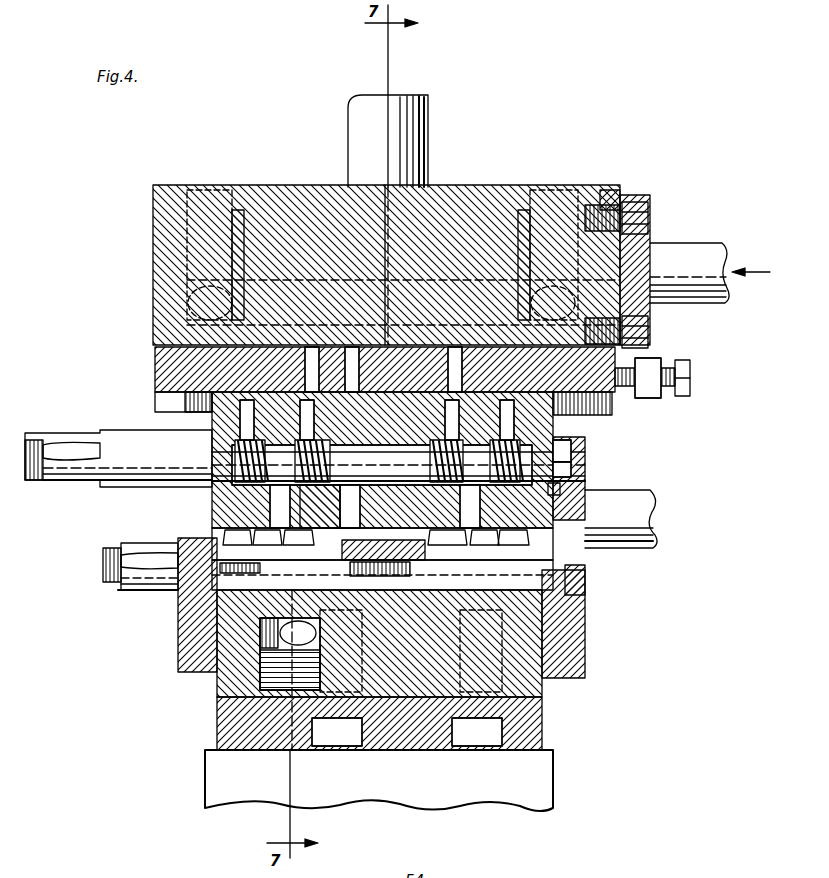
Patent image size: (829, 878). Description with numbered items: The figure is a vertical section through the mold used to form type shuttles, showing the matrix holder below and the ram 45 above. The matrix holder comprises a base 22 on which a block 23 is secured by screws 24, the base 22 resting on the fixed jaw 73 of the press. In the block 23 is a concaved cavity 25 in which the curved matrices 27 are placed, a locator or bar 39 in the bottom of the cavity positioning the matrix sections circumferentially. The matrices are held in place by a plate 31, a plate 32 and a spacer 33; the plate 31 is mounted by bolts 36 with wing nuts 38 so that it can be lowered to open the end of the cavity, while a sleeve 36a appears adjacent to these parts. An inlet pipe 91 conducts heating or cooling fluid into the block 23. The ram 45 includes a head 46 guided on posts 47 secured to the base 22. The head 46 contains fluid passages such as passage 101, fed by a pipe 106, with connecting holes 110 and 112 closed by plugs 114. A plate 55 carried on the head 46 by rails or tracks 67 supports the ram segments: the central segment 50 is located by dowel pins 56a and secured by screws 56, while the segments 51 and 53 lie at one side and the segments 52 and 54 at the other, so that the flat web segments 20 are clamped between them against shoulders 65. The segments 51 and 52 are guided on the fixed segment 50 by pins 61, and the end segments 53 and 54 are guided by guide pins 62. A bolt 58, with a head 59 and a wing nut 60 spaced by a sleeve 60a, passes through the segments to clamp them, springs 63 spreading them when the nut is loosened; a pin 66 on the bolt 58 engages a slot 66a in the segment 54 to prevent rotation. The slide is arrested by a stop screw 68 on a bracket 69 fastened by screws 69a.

The ram 45 is at (122, 205).
The ram head 46 is at (153, 250).
The posts 47 is at (420, 127).
The fluid passage 101 is at (432, 278).
The pipe 106 is at (700, 262).
The hole 110 is at (233, 240).
The hole 112 is at (522, 248).
The plugs 114 is at (185, 197).
The bracket 69 is at (630, 195).
The screws 69a is at (648, 216).
The stop screw 68 is at (690, 380).
The plate 55 is at (155, 368).
The screws 56 is at (352, 347).
The dowel pins 56a is at (312, 347).
The rails or tracks 67 is at (170, 398).
The guide pins 62 is at (247, 410).
The pins 61 is at (306, 410).
The springs 63 is at (240, 458).
The wing nut 60 is at (60, 445).
The sleeve 60a is at (112, 483).
The ram segment 53 is at (212, 492).
The ram segment 54 is at (545, 508).
The bolt 58 is at (565, 455).
The head 59 is at (572, 470).
The pin 66 is at (560, 490).
The slot 66a is at (560, 492).
The inlet pipe 91 is at (648, 505).
The matrices 27 is at (700, 540).
The spacer 33 is at (352, 530).
The shoulders 65 is at (378, 547).
The ram segment 51 is at (278, 545).
The ram segment 52 is at (485, 546).
The segments 20 is at (452, 532).
The ram segment 50 is at (383, 550).
The bolts 36 is at (108, 562).
The wing nuts 38 is at (145, 588).
The sleeve 36a is at (580, 600).
The plate 31 is at (192, 672).
The plate 32 is at (585, 663).
The block 23 is at (545, 690).
The cavity or groove 25 is at (272, 585).
The locator or bar 39 is at (422, 580).
The base 22 is at (545, 733).
The screws 24 is at (322, 746).
The fixed jaw 73 is at (220, 780).